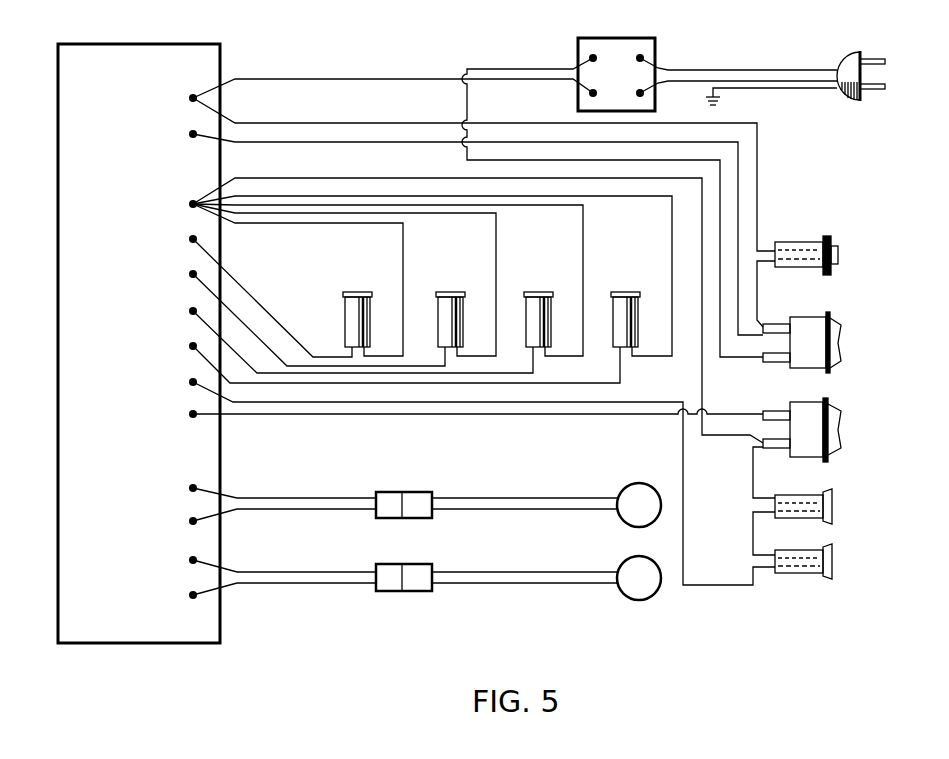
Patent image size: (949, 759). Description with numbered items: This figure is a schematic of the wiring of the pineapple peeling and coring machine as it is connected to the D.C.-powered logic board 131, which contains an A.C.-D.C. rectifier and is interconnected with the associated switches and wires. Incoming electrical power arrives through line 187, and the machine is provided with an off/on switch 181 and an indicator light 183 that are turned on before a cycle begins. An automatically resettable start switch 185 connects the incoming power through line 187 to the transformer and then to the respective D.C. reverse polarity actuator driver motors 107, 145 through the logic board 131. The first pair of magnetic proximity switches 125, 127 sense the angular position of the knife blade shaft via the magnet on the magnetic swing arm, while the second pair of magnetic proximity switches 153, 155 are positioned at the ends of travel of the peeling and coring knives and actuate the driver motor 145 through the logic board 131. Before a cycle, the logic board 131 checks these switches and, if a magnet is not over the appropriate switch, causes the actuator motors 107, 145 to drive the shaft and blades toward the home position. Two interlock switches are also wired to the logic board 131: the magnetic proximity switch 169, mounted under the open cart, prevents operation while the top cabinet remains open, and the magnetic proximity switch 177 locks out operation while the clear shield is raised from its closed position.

The logic board 131 is at (207, 628).
The magnetic proximity switch 125 is at (346, 308).
The magnetic proximity switch 127 is at (439, 308).
The magnetic proximity switch 153 is at (527, 308).
The magnetic proximity switch 155 is at (614, 308).
The driver motor 107 is at (639, 505).
The driver motor 145 is at (639, 578).
The line 187 is at (807, 82).
The indicator light 183 is at (810, 243).
The off/on switch 181 is at (807, 320).
The start switch 185 is at (800, 406).
The magnetic proximity switch 169 is at (803, 497).
The magnetic proximity switch 177 is at (807, 567).